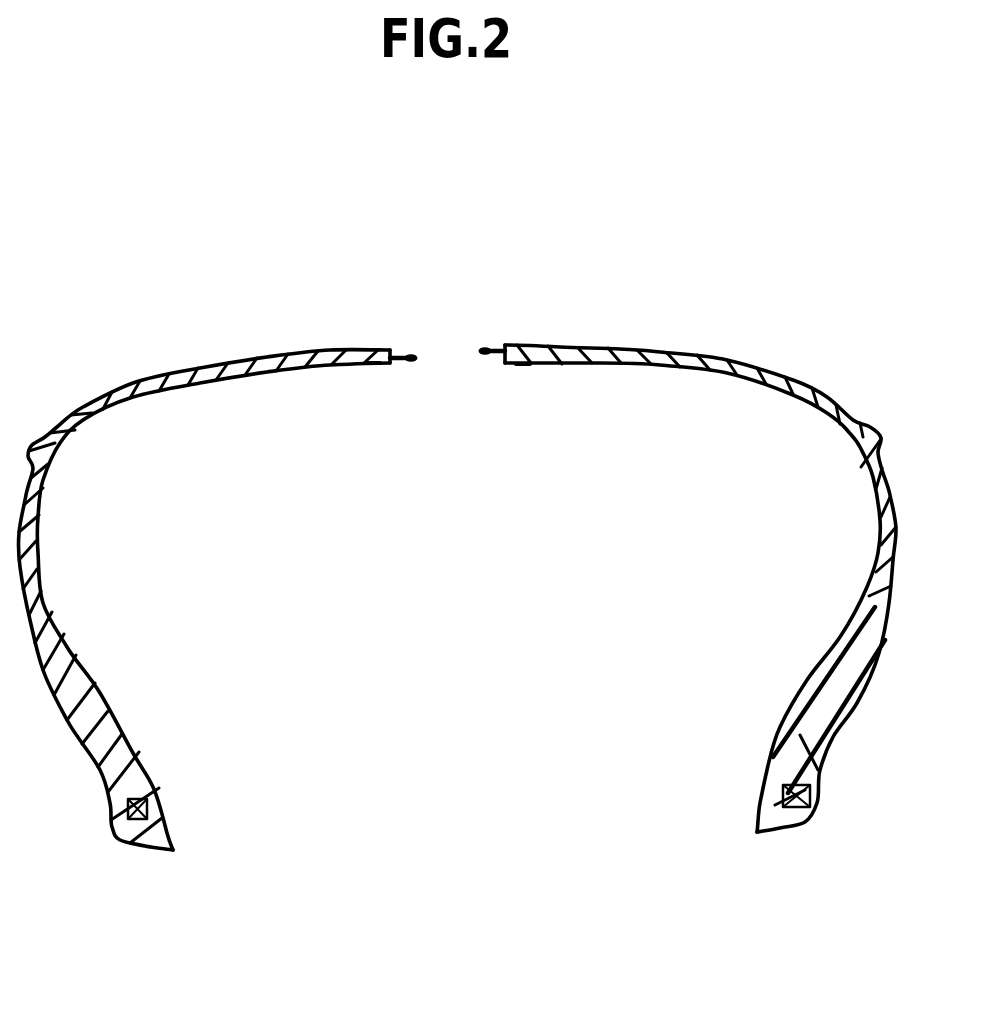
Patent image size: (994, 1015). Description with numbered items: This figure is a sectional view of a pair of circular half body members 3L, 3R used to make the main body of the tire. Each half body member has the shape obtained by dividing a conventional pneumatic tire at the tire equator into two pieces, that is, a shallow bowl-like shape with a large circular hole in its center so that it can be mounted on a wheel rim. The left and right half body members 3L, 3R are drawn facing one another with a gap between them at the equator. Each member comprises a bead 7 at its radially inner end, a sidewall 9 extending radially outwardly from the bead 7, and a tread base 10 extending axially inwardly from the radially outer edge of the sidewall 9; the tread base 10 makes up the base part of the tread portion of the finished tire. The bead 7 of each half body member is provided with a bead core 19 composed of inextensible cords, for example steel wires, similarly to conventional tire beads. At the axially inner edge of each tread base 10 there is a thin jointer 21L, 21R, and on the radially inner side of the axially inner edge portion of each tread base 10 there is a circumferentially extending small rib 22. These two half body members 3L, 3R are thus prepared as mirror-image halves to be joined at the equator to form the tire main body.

The circular half body member 3L is at (199, 293).
The circular half body member 3R is at (667, 293).
The tread base 10 is at (228, 372).
The small rib 22 is at (373, 363).
The thin jointer 21L is at (407, 366).
The thin jointer 21R is at (495, 360).
The sidewall 9 is at (50, 643).
The bead 7 is at (150, 790).
The bead core 19 is at (147, 807).